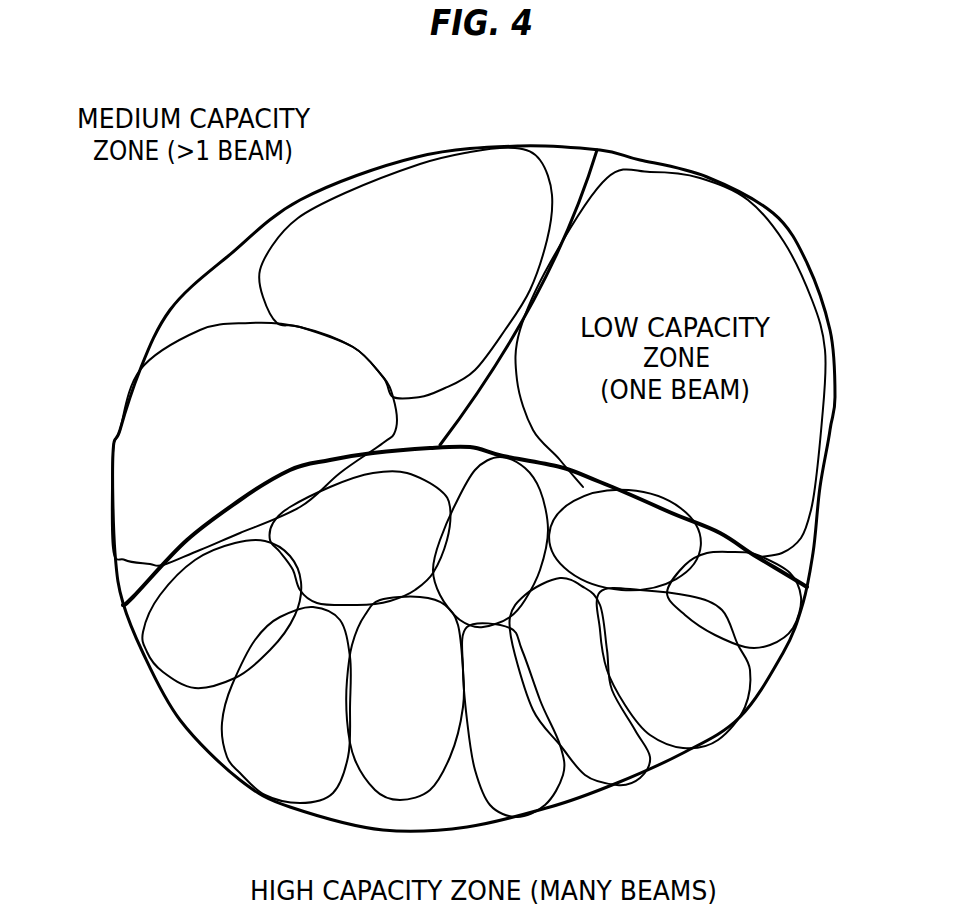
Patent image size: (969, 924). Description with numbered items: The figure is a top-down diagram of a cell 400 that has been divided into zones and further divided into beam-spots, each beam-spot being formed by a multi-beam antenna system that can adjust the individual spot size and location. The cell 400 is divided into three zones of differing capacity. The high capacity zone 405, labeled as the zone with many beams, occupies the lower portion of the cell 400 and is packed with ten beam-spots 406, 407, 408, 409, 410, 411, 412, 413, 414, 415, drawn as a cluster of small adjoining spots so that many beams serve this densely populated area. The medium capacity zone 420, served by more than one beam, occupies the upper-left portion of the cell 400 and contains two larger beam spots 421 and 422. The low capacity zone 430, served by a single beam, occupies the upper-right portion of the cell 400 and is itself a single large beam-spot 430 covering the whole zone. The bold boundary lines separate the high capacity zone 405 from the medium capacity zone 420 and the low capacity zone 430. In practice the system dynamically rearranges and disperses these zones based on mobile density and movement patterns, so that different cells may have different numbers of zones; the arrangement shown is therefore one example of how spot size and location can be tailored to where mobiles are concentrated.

The cell 400 is at (473, 104).
The high capacity zone 405 is at (680, 773).
The beam-spot 406 is at (756, 607).
The beam-spot 407 is at (693, 677).
The beam-spot 408 is at (590, 701).
The beam-spot 409 is at (636, 551).
The beam-spot 410 is at (523, 747).
The beam-spot 411 is at (423, 694).
The beam-spot 412 is at (513, 557).
The beam-spot 413 is at (380, 557).
The beam-spot 414 is at (243, 627).
The beam-spot 415 is at (316, 717).
The medium capacity zone 420 is at (138, 357).
The beam-spot 421 is at (430, 270).
The beam-spot 422 is at (253, 442).
The low capacity zone 430 is at (793, 230).